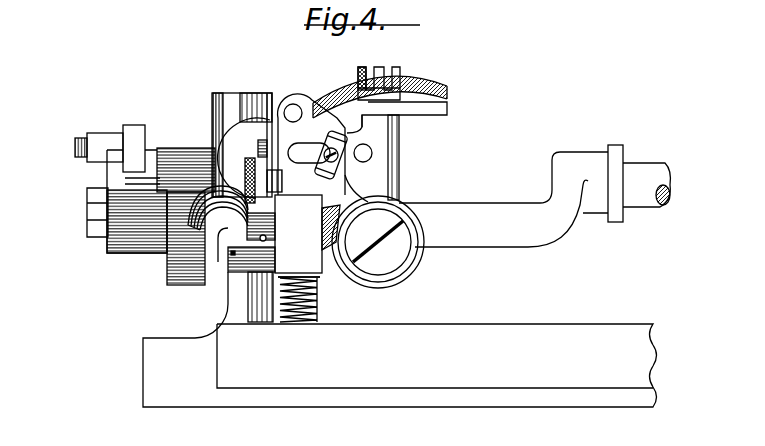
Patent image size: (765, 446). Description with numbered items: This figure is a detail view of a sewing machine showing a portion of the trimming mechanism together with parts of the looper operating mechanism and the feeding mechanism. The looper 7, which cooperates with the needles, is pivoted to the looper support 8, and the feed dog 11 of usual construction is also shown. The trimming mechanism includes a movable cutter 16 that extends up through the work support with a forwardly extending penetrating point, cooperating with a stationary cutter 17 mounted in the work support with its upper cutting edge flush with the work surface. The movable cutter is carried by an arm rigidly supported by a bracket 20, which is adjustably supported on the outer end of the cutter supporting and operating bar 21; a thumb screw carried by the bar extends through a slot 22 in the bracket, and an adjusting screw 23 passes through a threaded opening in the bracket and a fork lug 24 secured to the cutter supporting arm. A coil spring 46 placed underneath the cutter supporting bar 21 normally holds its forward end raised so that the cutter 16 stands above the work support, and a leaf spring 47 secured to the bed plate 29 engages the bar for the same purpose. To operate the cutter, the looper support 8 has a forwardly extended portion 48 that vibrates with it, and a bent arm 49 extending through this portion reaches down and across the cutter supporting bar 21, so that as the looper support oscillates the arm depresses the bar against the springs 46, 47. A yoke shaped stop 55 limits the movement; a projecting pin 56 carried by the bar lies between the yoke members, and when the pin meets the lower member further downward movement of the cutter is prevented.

The looper 7 is at (340, 85).
The looper support 8 is at (472, 210).
The feed dog 11 is at (400, 72).
The movable cutter 16 is at (370, 76).
The stationary cutter 17 is at (357, 72).
The bracket 20 is at (297, 98).
The cutter supporting and operating bar 21 is at (298, 234).
The slot 22 is at (313, 155).
The adjusting screw 23 is at (205, 222).
The fork lug 24 is at (260, 143).
The bed plate 29 is at (400, 365).
The coil spring 46 is at (318, 310).
The leaf spring 47 is at (318, 280).
The forwardly extended portion 48 is at (183, 162).
The bent arm 49 is at (240, 232).
The stop 55 is at (260, 295).
The projecting pin 56 is at (240, 265).